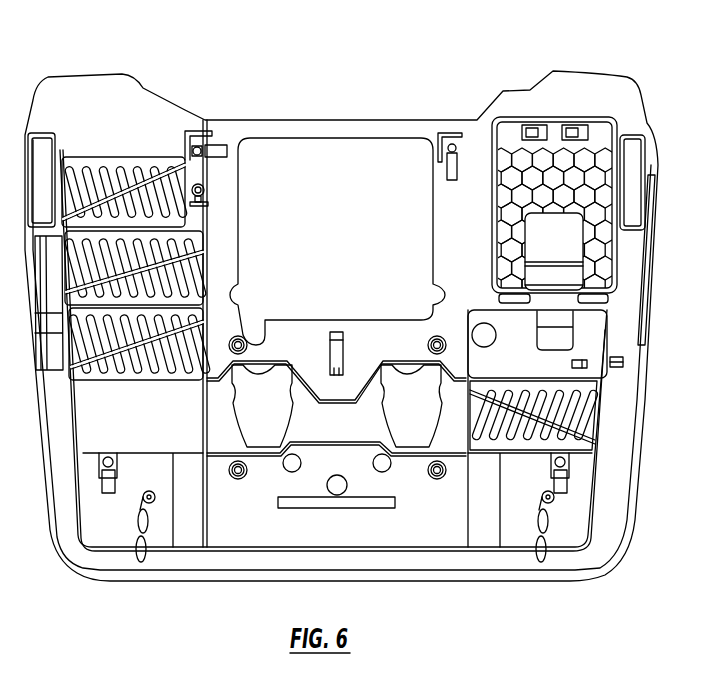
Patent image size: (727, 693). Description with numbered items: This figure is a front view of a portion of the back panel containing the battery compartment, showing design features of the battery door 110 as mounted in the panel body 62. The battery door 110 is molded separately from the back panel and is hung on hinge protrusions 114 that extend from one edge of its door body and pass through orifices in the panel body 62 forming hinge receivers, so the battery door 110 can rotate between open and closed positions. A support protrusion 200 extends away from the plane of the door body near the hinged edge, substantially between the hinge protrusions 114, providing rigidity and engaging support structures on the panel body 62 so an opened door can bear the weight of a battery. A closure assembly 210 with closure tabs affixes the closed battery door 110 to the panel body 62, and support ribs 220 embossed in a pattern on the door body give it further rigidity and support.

The panel body 62 is at (241, 117).
The battery door 110 is at (574, 102).
The hinge protrusions 114 is at (495, 300).
The support protrusion 200 is at (557, 237).
The closure assembly 210 is at (522, 124).
The support ribs 220 is at (508, 155).